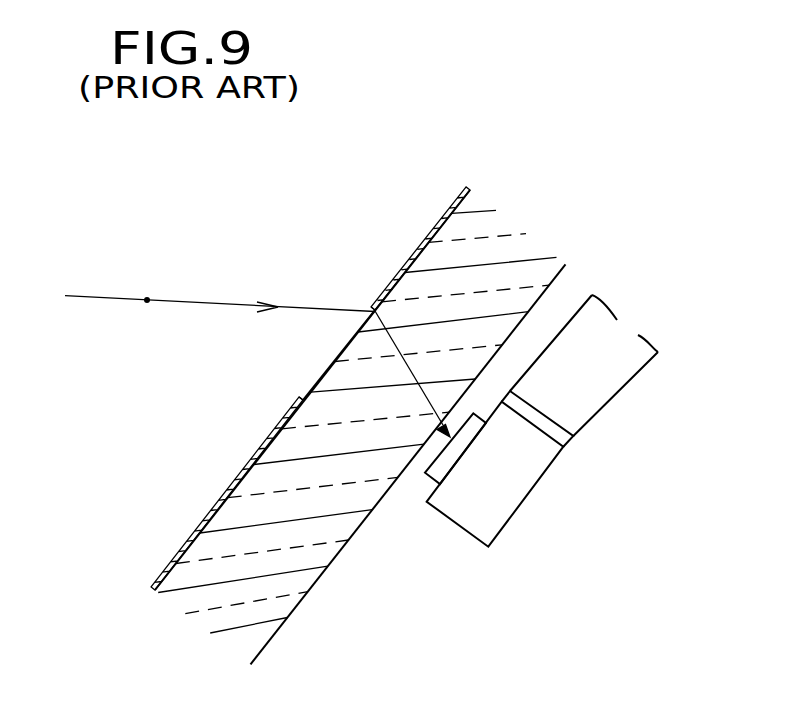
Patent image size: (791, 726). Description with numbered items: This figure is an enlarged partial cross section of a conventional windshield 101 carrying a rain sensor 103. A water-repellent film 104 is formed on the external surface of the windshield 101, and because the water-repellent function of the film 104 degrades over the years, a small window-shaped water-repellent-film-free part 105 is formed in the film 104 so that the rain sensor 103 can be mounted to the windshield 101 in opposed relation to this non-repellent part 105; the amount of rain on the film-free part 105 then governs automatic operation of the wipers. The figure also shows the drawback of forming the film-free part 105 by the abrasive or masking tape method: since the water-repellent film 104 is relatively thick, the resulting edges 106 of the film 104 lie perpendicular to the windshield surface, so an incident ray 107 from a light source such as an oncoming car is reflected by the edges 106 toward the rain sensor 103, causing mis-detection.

The windshield 101 is at (286, 625).
The rain sensor 103 is at (455, 523).
The water-repellent film 104 is at (447, 217).
The water-repellent-film-free part 105 is at (324, 376).
The edges 106 is at (372, 309).
The incident ray 107 is at (146, 299).